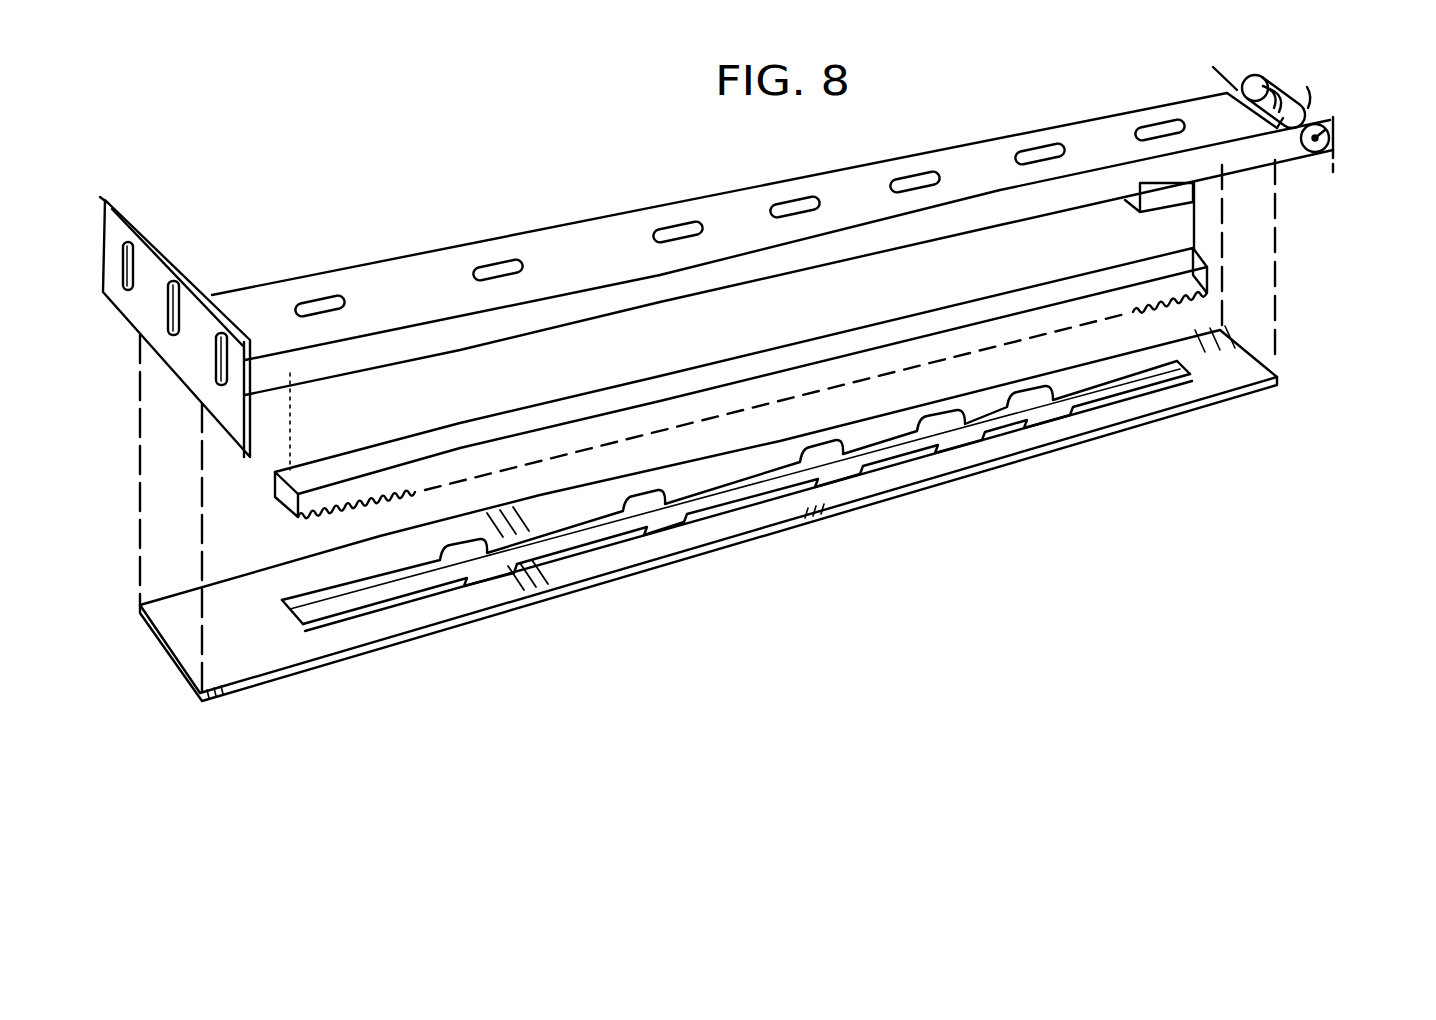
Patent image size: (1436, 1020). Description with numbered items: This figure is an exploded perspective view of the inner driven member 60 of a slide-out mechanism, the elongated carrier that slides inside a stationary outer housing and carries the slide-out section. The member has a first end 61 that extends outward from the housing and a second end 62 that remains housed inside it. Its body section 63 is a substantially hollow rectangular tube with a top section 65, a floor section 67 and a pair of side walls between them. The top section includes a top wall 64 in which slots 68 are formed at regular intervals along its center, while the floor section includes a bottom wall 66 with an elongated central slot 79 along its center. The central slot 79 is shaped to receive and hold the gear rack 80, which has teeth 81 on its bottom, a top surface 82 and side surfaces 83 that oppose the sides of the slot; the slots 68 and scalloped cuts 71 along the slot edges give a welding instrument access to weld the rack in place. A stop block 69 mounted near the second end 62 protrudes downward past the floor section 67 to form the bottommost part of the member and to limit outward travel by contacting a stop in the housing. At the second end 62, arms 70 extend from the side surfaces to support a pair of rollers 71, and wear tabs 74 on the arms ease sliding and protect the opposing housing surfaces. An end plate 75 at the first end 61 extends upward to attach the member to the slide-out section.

The inner driven member 60 is at (508, 182).
The first end 61 is at (187, 286).
The second end 62 is at (1328, 122).
The body section 63 is at (845, 192).
The top wall 64 is at (727, 225).
The top section 65 is at (997, 125).
The bottom wall 66 is at (772, 512).
The floor section 67 is at (1118, 413).
The slots 68 is at (672, 228).
The stop block 69 is at (1163, 194).
The arms 70 is at (1300, 128).
The rollers 71 is at (1257, 85).
The wear tabs 74 is at (1324, 135).
The end plate 75 is at (192, 362).
The central slot 79 is at (570, 543).
The gear rack 80 is at (605, 403).
The teeth 81 is at (387, 504).
The top surface 82 is at (317, 475).
The side surfaces 83 is at (332, 505).